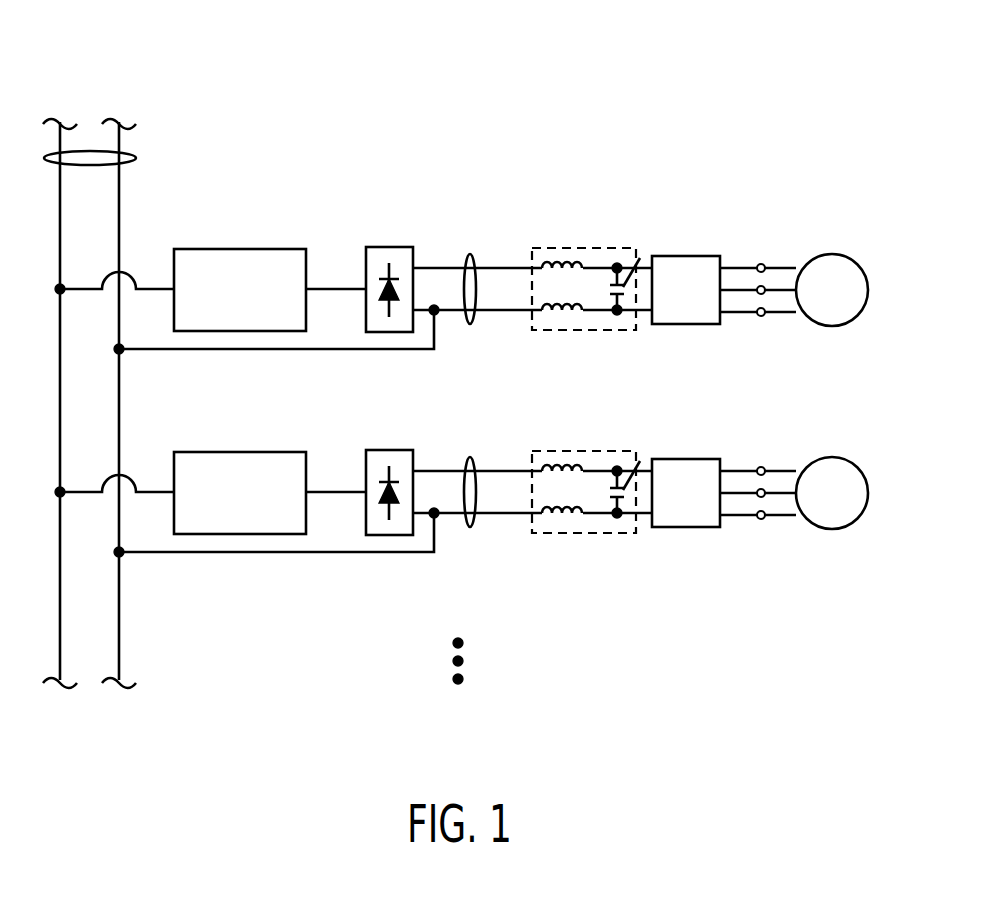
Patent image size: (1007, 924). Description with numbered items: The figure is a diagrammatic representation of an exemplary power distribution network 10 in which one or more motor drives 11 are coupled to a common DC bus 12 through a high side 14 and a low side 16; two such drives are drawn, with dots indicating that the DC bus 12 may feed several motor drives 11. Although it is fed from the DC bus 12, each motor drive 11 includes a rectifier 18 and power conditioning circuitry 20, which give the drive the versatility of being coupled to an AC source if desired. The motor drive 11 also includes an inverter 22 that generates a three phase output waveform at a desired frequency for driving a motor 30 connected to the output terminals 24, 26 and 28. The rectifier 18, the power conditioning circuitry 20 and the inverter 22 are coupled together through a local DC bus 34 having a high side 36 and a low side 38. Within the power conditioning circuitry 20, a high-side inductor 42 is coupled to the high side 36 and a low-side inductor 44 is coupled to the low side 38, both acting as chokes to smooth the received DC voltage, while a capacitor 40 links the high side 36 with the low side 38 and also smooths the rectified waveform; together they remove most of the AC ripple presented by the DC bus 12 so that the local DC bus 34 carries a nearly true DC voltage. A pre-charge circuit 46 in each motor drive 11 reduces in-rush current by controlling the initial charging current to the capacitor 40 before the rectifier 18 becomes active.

The power distribution network 10 is at (450, 80).
The motor drive 11 is at (650, 152).
The DC bus 12 is at (133, 156).
The high side 14 is at (153, 289).
The low side 16 is at (205, 350).
The rectifier 18 is at (388, 247).
The power conditioning circuitry 20 is at (556, 248).
The inverter 22 is at (695, 256).
The output terminal 24 is at (759, 263).
The output terminal 26 is at (767, 286).
The output terminal 28 is at (765, 316).
The motor 30 is at (836, 255).
The local DC bus 34 is at (467, 260).
The high side 36 is at (506, 268).
The low side 38 is at (500, 312).
The capacitor 40 is at (640, 258).
The high-side inductor 42 is at (582, 266).
The low-side inductor 44 is at (582, 313).
The pre-charge circuit 46 is at (240, 249).